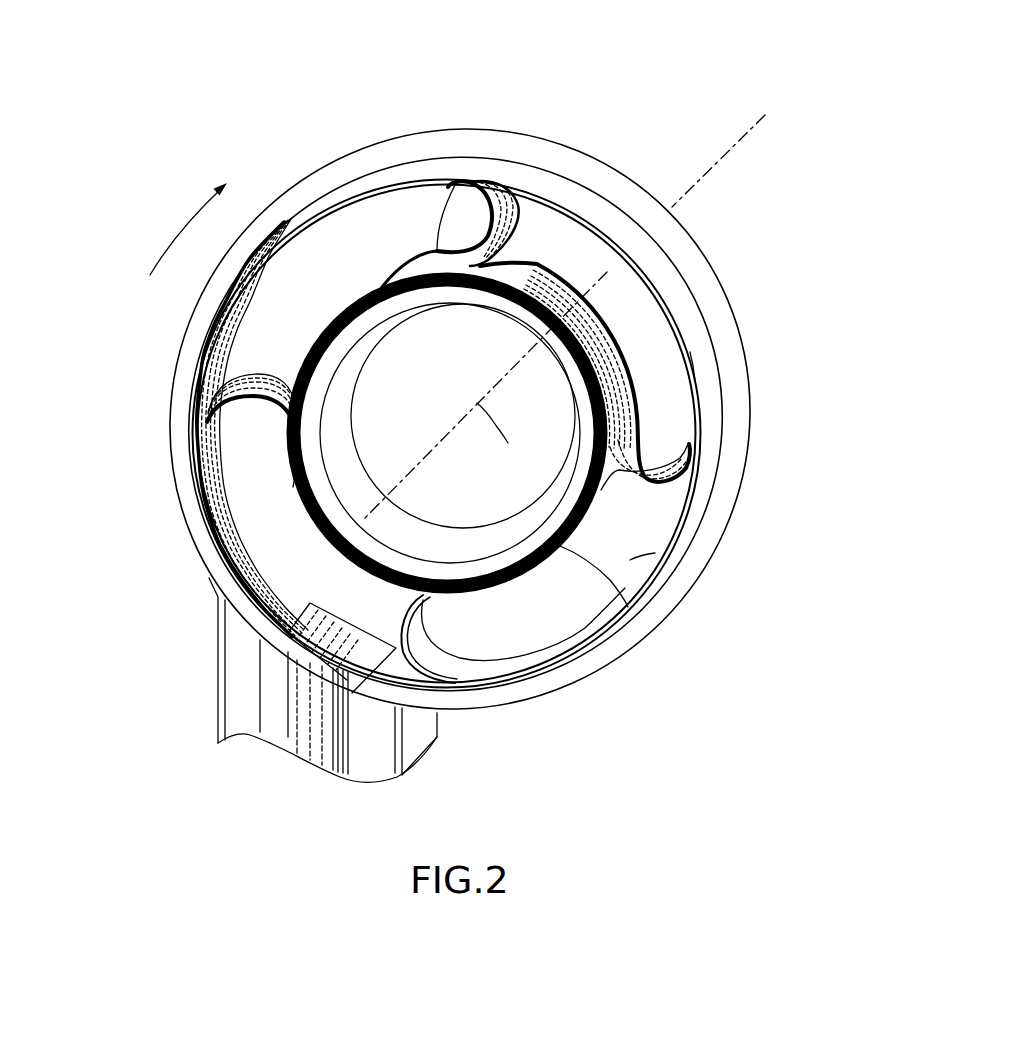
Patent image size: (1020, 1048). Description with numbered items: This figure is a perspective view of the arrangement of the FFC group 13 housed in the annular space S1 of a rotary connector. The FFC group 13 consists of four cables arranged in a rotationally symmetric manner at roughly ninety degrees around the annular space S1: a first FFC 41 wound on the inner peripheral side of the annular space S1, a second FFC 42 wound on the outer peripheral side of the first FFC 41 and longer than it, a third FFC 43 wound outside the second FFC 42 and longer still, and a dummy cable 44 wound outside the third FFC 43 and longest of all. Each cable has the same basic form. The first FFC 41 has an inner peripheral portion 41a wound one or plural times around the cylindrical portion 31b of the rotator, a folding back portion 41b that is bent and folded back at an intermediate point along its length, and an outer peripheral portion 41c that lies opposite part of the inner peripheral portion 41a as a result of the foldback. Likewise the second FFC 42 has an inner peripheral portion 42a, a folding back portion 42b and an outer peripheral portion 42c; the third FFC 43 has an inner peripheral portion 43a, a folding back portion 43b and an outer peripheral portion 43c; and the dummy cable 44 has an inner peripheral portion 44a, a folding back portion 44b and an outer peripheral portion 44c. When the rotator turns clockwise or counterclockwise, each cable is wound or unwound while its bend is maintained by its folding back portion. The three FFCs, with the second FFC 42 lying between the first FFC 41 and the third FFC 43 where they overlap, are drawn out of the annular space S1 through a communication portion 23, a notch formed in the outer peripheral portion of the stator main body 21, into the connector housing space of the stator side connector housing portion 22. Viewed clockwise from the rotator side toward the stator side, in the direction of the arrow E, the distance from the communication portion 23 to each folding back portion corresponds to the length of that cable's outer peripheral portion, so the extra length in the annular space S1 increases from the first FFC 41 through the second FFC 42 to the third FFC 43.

The FFC group 13 is at (599, 214).
The stator main body 21 is at (461, 713).
The stator side connector housing portion 22 is at (208, 643).
The communication portion 23 is at (276, 671).
The cylindrical portion 31b is at (420, 303).
The first FFC 41 is at (171, 428).
The inner peripheral portion 41a is at (290, 482).
The folding back portion 41b is at (250, 380).
The outer peripheral portion 41c is at (215, 530).
The second FFC 42 is at (477, 158).
The inner peripheral portion 42a is at (455, 185).
The folding back portion 42b is at (546, 169).
The outer peripheral portion 42c is at (385, 180).
The third FFC 43 is at (684, 371).
The inner peripheral portion 43a is at (693, 335).
The folding back portion 43b is at (660, 452).
The outer peripheral portion 43c is at (690, 352).
The dummy cable 44 is at (583, 682).
The inner peripheral portion 44a is at (656, 658).
The folding back portion 44b is at (418, 628).
The outer peripheral portion 44c is at (560, 648).
The annular space S1 is at (630, 560).
The arrow E is at (182, 236).
The rotation axis x is at (501, 431).